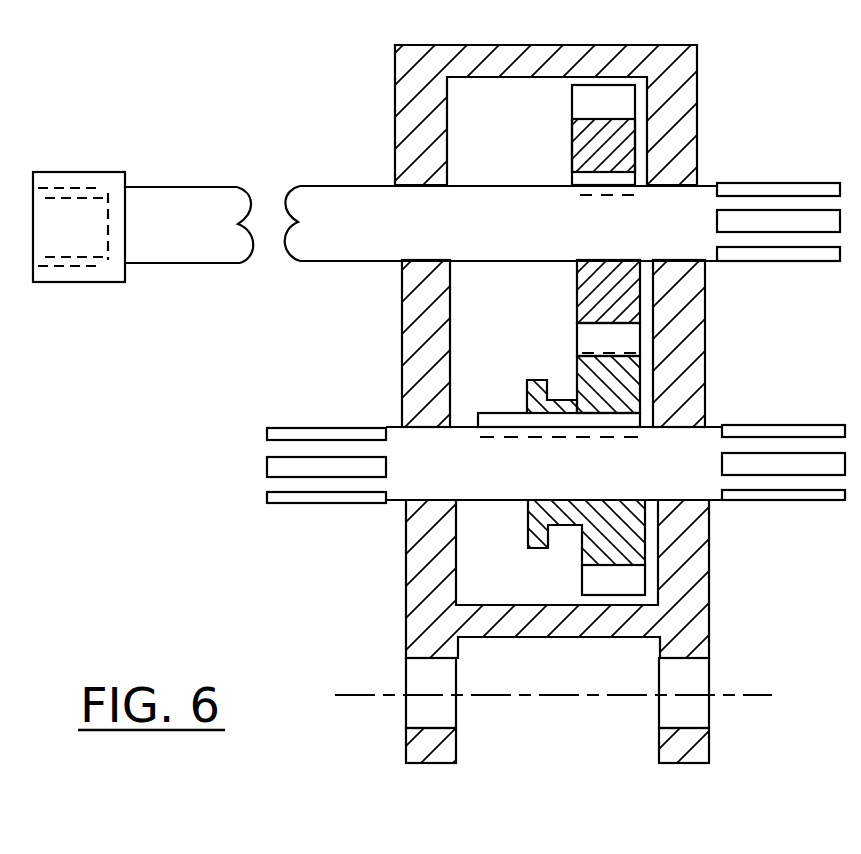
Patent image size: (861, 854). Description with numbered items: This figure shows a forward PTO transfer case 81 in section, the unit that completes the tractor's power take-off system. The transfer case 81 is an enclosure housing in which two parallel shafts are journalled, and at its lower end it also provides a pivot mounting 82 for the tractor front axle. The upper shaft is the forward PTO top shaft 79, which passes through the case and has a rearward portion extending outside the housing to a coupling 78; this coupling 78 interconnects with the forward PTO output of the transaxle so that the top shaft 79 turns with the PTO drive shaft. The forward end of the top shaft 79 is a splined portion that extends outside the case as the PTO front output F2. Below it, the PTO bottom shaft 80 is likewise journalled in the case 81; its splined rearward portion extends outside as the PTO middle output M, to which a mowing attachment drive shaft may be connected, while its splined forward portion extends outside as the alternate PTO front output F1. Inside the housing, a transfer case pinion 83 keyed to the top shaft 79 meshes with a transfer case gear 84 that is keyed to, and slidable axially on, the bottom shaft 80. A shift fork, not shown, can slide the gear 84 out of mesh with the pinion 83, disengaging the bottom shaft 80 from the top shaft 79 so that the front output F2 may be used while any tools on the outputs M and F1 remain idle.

The coupling 78 is at (67, 275).
The forward PTO top shaft 79 is at (300, 253).
The PTO bottom shaft 80 is at (488, 492).
The forward PTO transfer case 81 is at (405, 103).
The pivot mounting 82 is at (433, 700).
The transfer case pinion 83 is at (585, 102).
The transfer case gear 84 is at (597, 580).
The alternate PTO front output F1 is at (765, 485).
The PTO front output F2 is at (775, 238).
The PTO middle output M is at (293, 484).